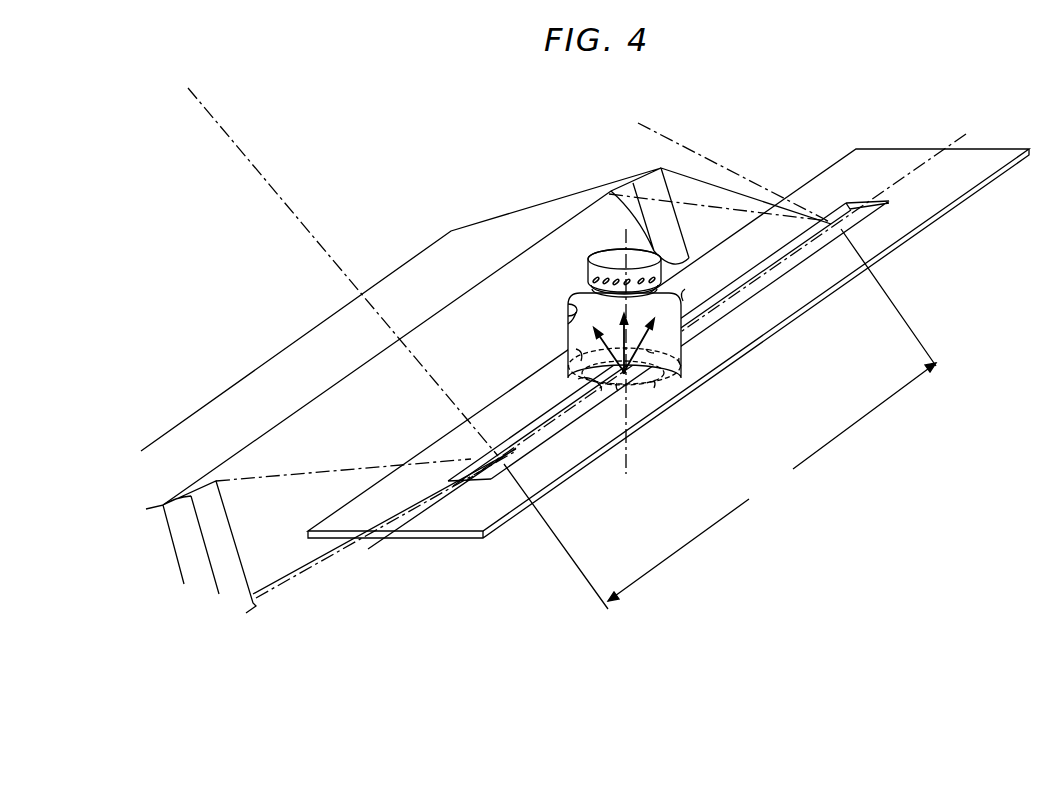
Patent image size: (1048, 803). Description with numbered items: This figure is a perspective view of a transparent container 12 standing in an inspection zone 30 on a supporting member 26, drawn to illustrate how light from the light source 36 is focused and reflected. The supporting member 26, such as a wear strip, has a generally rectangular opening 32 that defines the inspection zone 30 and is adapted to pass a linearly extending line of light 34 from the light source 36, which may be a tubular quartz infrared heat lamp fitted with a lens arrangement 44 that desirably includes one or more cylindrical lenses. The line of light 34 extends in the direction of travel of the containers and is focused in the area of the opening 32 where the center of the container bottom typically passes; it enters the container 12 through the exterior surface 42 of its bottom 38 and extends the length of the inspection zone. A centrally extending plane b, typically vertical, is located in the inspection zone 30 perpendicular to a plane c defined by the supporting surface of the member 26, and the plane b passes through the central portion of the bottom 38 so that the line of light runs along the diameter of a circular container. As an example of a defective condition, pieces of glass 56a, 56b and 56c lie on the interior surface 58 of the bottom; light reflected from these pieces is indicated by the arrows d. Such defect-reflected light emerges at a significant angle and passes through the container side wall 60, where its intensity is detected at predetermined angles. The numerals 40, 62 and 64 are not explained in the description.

The container 12 is at (573, 295).
The supporting member 26 is at (997, 148).
The inspection zone 30 is at (720, 419).
The opening 32 is at (855, 200).
The line of light 34 is at (515, 452).
The light source 36 is at (265, 380).
The bottom 38 is at (617, 390).
The light source point 40 is at (625, 372).
The exterior surface 42 is at (653, 387).
The lens arrangement 44 is at (688, 233).
The piece of glass 56a is at (653, 352).
The piece of glass 56b is at (575, 348).
The piece of glass 56c is at (587, 380).
The interior surface 58 is at (680, 365).
The container side wall 60 is at (567, 363).
The housing shoulder 62 is at (567, 308).
The housing rim 64 is at (567, 323).
The centrally extending plane b is at (625, 457).
The plane c is at (907, 172).
The arrows d is at (657, 325).